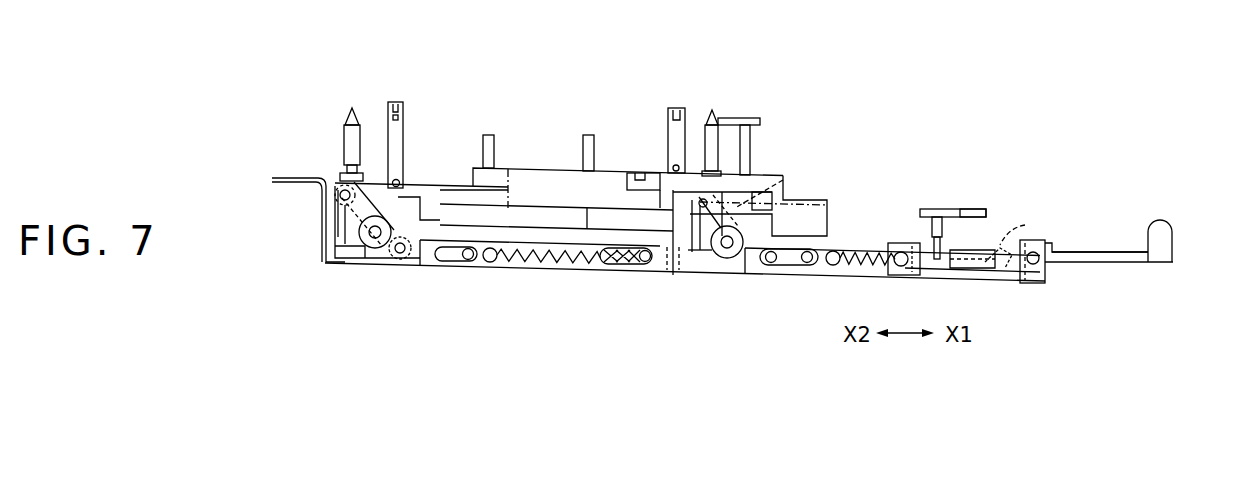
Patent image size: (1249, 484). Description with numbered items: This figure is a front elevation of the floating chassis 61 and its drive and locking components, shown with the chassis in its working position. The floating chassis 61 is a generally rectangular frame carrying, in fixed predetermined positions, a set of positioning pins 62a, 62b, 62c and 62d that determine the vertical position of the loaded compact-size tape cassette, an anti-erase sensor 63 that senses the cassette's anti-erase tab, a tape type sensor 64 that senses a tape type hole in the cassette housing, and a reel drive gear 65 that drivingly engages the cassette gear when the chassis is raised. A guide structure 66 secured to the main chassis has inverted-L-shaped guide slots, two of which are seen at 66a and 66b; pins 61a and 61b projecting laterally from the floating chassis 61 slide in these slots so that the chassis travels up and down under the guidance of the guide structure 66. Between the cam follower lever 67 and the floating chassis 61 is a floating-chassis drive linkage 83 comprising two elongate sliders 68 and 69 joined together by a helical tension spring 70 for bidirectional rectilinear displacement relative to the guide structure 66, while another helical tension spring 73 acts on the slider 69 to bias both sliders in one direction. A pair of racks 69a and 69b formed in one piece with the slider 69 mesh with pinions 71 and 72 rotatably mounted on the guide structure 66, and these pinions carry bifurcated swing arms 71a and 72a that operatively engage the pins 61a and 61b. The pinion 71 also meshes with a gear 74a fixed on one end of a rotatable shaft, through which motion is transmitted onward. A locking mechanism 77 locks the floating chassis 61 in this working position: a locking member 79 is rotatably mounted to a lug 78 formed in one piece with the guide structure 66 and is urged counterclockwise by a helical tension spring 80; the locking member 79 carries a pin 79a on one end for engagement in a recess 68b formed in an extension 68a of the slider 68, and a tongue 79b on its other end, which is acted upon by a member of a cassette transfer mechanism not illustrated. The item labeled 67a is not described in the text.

The floating chassis 61 is at (542, 160).
The pin 61a is at (341, 200).
The pin 61b is at (732, 175).
The positioning pin 62a is at (344, 118).
The positioning pin 62b is at (709, 110).
The positioning pin 62c is at (489, 134).
The positioning pin 62d is at (588, 134).
The anti-erase sensor 63 is at (393, 101).
The tape type sensor 64 is at (673, 132).
The reel drive gear 65 is at (745, 114).
The guide structure 66 is at (314, 198).
The guide slot 66a is at (338, 232).
The guide slot 66b is at (698, 250).
The cam follower lever 67 is at (937, 209).
The stopper head 67a is at (955, 210).
The slider 68 is at (836, 251).
The extension 68a is at (897, 243).
The recess 68b is at (946, 256).
The slider 69 is at (490, 262).
The rack 69a is at (348, 264).
The rack 69b is at (707, 257).
The helical tension spring 70 is at (863, 268).
The pinion 71 is at (376, 249).
The bifurcated swing arm 71a is at (404, 186).
The pinion 72 is at (735, 257).
The bifurcated swing arm 72a is at (784, 186).
The helical tension spring 73 is at (538, 262).
The gear 74a is at (409, 258).
The locking mechanism 77 is at (1098, 211).
The lug 78 is at (1050, 277).
The locking member 79 is at (1118, 265).
The pin 79a is at (938, 272).
The tongue 79b is at (1165, 241).
The helical tension spring 80 is at (1018, 228).
The floating-chassis drive linkage 83 is at (618, 280).